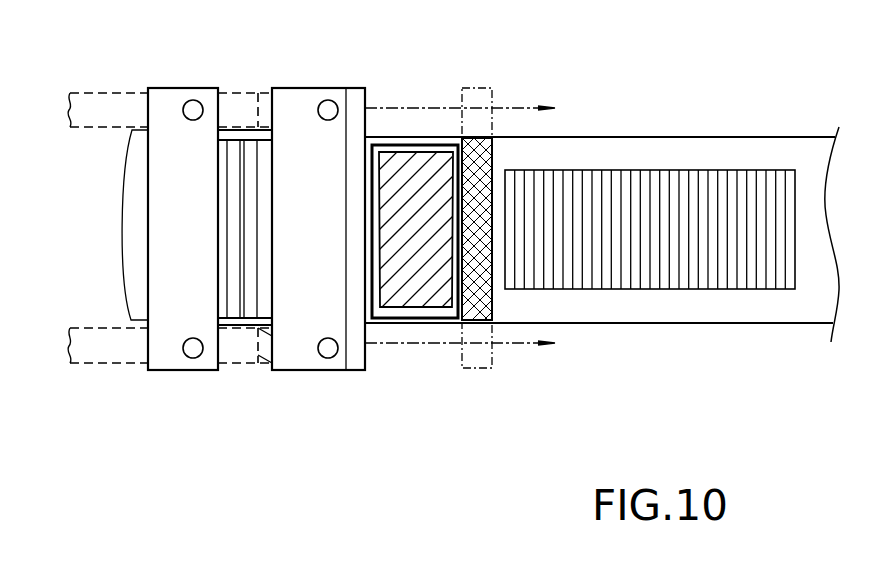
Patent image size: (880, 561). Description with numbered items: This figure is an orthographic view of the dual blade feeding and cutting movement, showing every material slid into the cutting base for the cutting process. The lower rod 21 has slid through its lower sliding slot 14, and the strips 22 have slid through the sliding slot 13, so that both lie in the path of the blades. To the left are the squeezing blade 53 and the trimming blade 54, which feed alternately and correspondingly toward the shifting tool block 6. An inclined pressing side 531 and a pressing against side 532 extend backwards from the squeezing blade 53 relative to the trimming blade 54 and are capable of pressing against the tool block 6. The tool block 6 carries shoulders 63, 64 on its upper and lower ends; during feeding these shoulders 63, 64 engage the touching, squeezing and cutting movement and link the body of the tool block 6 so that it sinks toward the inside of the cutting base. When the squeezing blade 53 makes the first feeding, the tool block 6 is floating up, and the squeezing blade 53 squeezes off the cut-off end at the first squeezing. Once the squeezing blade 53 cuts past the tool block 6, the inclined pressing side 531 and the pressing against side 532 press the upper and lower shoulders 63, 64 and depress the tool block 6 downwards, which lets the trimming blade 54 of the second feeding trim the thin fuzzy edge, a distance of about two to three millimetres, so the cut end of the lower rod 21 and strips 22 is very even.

The sliding slot 13 is at (652, 166).
The strips 22 is at (687, 195).
The trimming blade 54 is at (158, 370).
The squeezing blade 53 is at (287, 370).
The inclined pressing side 531 is at (268, 105).
The pressing against side 532 is at (232, 103).
The lower sliding slot 14 is at (420, 320).
The lower rod 21 is at (420, 178).
The shifting tool block 6 is at (478, 160).
The upper shoulder 63 is at (485, 104).
The lower shoulder 64 is at (483, 353).